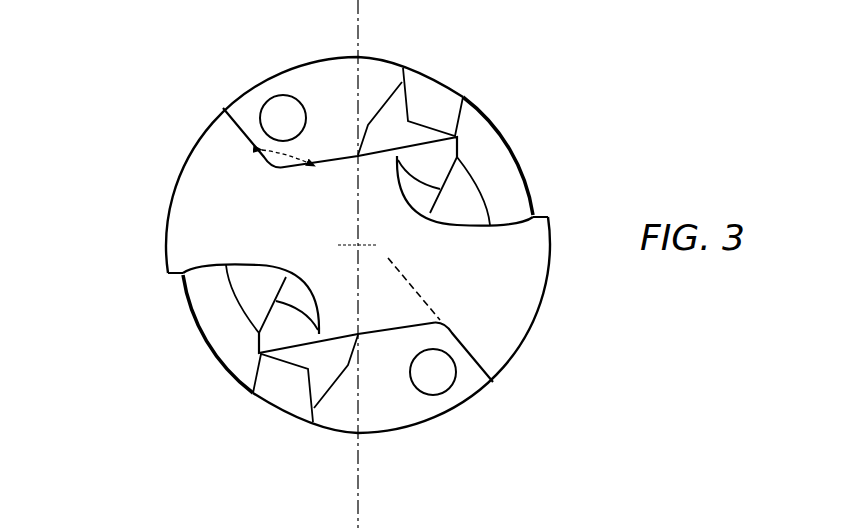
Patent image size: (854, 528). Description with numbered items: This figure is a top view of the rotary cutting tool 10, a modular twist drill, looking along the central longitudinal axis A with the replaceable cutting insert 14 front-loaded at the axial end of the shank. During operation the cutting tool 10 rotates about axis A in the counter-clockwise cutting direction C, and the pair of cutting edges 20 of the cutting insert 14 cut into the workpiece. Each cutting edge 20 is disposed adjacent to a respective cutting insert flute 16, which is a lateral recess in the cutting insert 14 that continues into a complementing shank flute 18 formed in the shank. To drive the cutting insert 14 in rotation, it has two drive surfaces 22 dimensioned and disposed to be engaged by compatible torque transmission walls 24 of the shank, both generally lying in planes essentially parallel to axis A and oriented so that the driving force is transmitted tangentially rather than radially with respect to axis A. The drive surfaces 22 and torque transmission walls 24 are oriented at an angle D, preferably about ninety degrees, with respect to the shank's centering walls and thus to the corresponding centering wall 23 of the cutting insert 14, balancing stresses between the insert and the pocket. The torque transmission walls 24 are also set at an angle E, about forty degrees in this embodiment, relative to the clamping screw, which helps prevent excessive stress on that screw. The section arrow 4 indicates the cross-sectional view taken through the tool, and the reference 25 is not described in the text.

The rotary cutting tool 10 is at (82, 81).
The cutting insert 14 is at (532, 338).
The cutting insert flute 16 is at (257, 276).
The shank flute 18 is at (458, 221).
The cutting edge 20 is at (500, 223).
The drive surface 22 is at (240, 125).
The centering wall of the cutting insert 23 is at (359, 148).
The torque transmission wall 24 is at (232, 122).
The coolant hole 25 is at (285, 116).
The central longitudinal axis A is at (355, 242).
The cutting direction C is at (228, 467).
The angle D is at (293, 157).
The angle E is at (407, 296).
The section line 4 is at (452, 492).